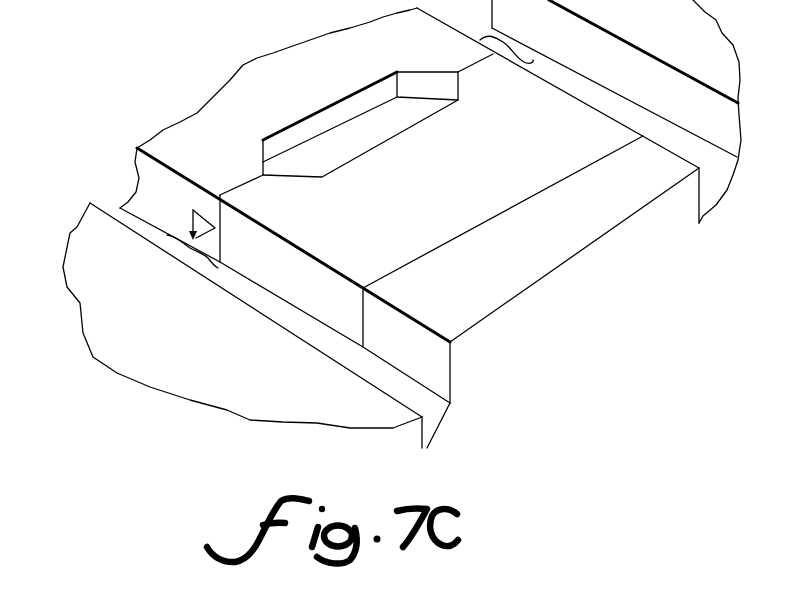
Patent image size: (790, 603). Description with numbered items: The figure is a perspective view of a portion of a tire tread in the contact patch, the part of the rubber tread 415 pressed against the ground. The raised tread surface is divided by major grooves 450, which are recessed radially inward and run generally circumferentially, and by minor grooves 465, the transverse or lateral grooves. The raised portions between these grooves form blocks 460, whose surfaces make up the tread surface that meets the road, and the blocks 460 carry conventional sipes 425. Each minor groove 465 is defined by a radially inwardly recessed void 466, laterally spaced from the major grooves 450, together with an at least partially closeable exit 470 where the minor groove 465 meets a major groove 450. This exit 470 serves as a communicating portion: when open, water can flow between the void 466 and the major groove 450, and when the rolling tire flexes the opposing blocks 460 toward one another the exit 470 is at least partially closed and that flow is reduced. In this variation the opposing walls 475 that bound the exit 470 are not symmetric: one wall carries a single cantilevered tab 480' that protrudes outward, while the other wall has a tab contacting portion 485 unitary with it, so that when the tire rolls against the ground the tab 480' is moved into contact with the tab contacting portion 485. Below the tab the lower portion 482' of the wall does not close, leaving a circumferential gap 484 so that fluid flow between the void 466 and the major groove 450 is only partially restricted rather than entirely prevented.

The rubber tread 415 is at (146, 74).
The sipes 425 is at (452, 243).
The major groove 450 is at (678, 143).
The block 460 is at (291, 108).
The minor groove 465 is at (345, 90).
The void 466 is at (399, 136).
The at least partially closeable exit 470 is at (533, 63).
The opposing walls 475 is at (212, 218).
The single cantilevered tab 480' is at (331, 128).
The lower portion 482' is at (176, 210).
The circumferential gap 484 is at (208, 247).
The tab contacting portion 485 is at (220, 195).